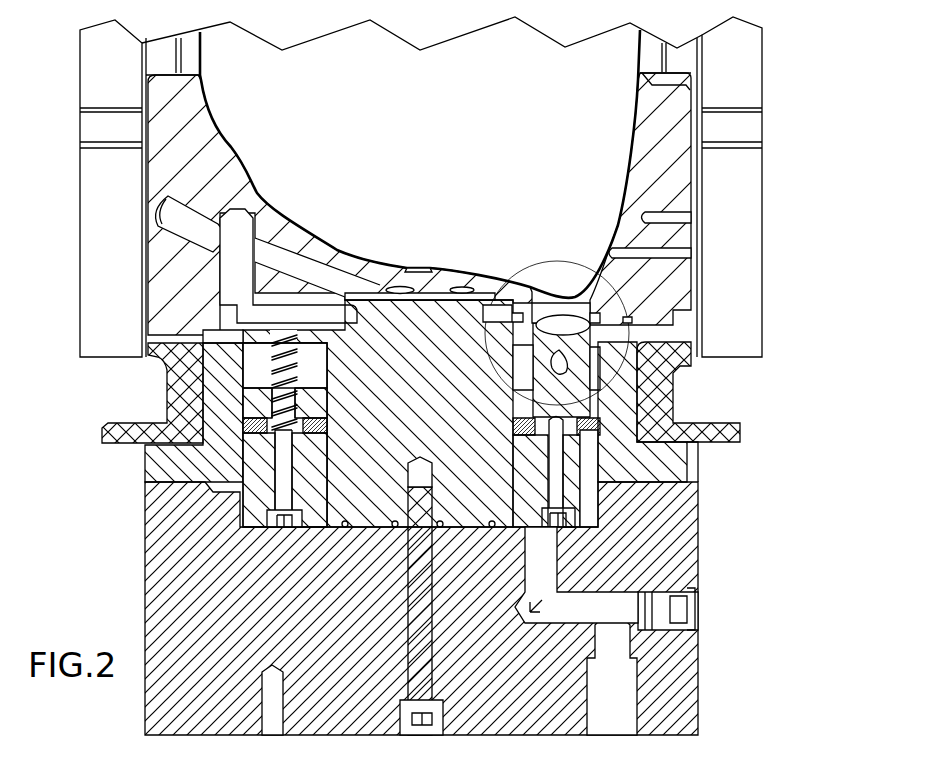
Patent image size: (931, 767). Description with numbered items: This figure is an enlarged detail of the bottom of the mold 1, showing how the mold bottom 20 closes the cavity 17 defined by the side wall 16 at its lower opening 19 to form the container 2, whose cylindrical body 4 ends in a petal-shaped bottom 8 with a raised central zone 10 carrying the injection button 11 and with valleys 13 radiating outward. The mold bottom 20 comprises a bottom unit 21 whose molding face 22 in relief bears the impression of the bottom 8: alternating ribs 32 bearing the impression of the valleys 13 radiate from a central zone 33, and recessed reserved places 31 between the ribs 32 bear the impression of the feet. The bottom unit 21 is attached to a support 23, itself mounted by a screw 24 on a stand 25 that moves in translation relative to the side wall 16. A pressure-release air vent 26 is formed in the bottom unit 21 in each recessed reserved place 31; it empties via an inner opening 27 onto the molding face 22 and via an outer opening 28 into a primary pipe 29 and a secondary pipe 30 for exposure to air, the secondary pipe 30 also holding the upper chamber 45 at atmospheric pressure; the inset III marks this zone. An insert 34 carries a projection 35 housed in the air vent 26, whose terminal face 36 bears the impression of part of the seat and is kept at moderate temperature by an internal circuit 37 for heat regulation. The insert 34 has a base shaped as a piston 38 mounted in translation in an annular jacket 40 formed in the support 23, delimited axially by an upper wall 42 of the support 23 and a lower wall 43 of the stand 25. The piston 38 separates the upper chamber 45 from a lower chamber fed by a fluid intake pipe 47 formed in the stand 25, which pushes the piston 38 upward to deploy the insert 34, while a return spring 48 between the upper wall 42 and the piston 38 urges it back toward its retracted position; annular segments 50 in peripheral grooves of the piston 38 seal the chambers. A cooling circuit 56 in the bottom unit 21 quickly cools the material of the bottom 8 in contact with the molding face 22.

The mold 1 is at (764, 86).
The container 2 is at (197, 42).
The body 4 is at (640, 40).
The bottom 8 is at (361, 258).
The raised central zone 10 is at (426, 265).
The injection button 11 is at (420, 270).
The valleys 13 is at (255, 206).
The side wall 16 is at (190, 63).
The cavity 17 is at (424, 104).
The lower opening 19 is at (206, 78).
The mold bottom 20 is at (699, 292).
The bottom unit 21 is at (162, 278).
The molding face 22 is at (306, 230).
The support 23 is at (150, 465).
The screw 24 is at (410, 648).
The stand 25 is at (150, 588).
The air vent 26 is at (579, 296).
The inner opening 27 is at (590, 266).
The outer opening 28 is at (600, 341).
The primary pipe 29 is at (676, 275).
The secondary pipe 30 is at (620, 343).
The recessed reserved places 31 is at (528, 280).
The ribs 32 is at (230, 168).
The central zone 33 is at (420, 294).
The insert 34 is at (606, 401).
The projection 35 is at (630, 362).
The terminal face 36 is at (554, 320).
The internal circuit 37 is at (545, 362).
The piston 38 is at (520, 408).
The jacket 40 is at (332, 380).
The upper wall 42 is at (305, 341).
The lower wall 43 is at (276, 522).
The upper chamber 45 is at (318, 368).
The fluid intake pipe 47 is at (530, 568).
The return spring 48 is at (270, 381).
The annular segments 50 is at (515, 430).
The cooling circuit 56 is at (202, 230).
The inset III is at (557, 317).